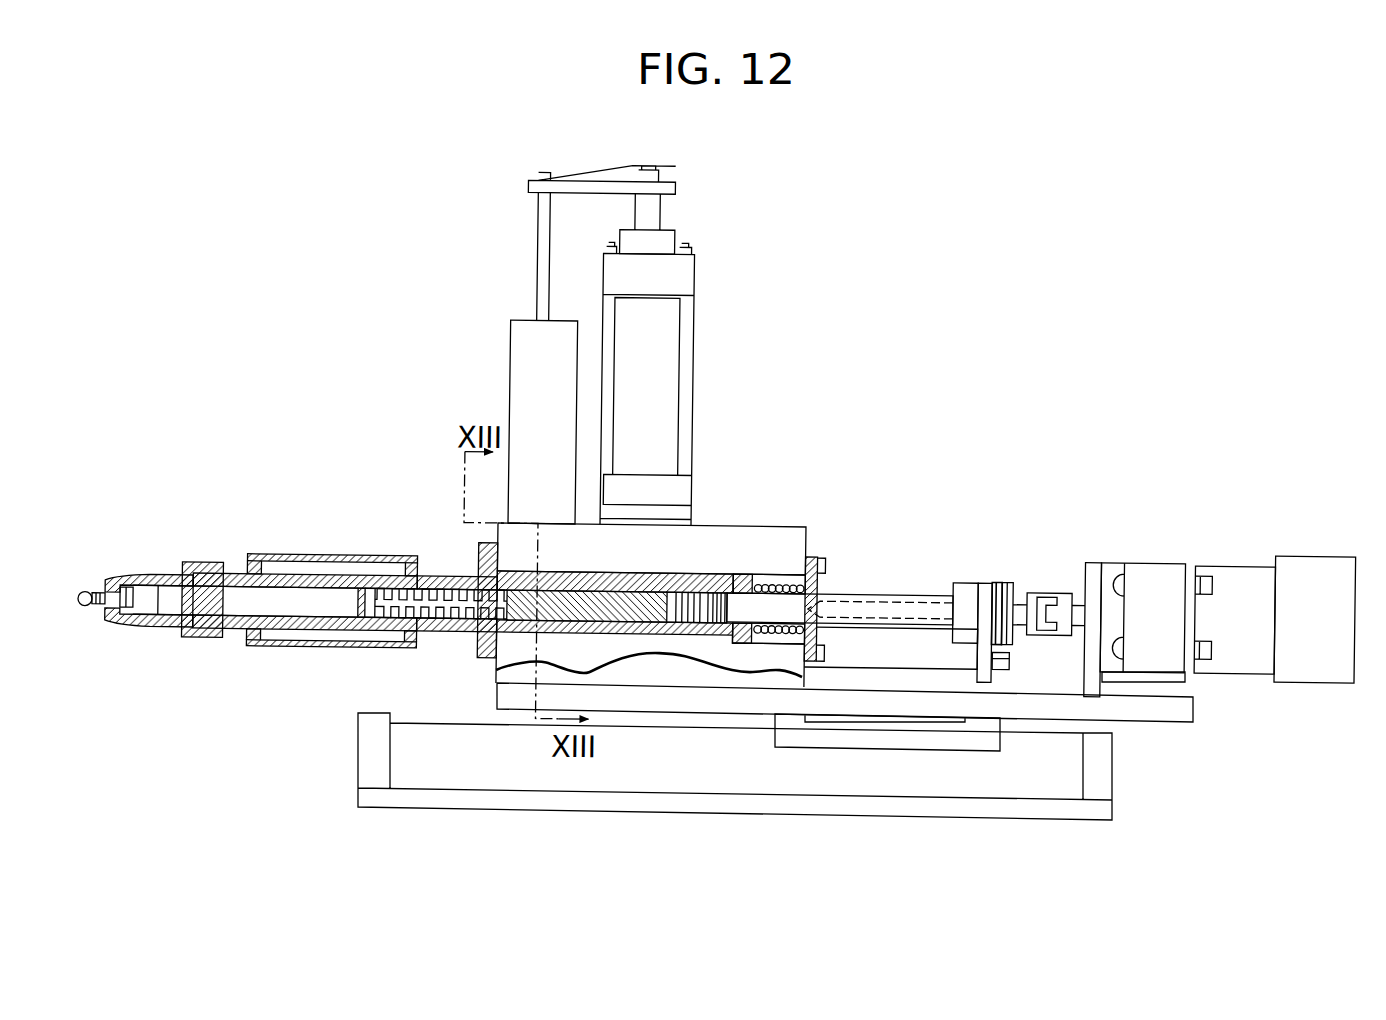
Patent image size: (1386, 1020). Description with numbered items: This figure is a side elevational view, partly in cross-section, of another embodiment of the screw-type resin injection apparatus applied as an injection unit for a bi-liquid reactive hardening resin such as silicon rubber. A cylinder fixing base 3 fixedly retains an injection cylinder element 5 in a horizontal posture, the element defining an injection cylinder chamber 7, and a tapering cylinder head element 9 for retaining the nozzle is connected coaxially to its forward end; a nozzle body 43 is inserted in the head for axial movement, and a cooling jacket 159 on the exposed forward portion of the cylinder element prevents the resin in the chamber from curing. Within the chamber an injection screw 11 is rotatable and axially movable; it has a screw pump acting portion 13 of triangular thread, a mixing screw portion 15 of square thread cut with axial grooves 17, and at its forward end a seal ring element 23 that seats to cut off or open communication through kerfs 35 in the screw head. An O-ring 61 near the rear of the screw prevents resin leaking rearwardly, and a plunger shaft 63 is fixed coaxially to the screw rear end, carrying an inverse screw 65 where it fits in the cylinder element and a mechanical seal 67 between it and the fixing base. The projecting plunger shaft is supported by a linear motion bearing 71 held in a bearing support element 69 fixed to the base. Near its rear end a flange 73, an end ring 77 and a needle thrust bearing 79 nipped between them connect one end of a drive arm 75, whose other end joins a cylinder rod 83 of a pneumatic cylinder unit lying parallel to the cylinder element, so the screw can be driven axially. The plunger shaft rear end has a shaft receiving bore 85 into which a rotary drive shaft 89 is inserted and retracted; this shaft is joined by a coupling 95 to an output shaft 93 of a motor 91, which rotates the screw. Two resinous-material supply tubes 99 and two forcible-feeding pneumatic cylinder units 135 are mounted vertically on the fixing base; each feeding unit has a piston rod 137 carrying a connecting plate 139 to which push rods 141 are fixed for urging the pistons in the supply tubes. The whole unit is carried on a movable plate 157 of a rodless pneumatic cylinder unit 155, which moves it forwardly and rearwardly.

The cylinder fixing base 3 is at (777, 545).
The injection cylinder element 5 is at (448, 633).
The injection cylinder chamber 7 is at (298, 606).
The cylinder head element 9 is at (178, 578).
The injection screw 11 is at (556, 606).
The screw pump acting portion 13 is at (600, 650).
The mixing screw portion 15 is at (420, 633).
The axial grooves 17 is at (440, 596).
The seal ring element 23 is at (362, 596).
The kerfs 35 is at (100, 622).
The nozzle body 43 is at (92, 598).
The O-ring 61 is at (690, 590).
The plunger shaft 63 is at (797, 565).
The inverse screw 65 is at (727, 590).
The mechanical seal 67 is at (735, 641).
The bearing support element 69 is at (818, 578).
The linear motion bearing 71 is at (785, 665).
The flange 73 is at (967, 640).
The drive arm 75 is at (985, 578).
The end ring 77 is at (1006, 578).
The needle thrust bearing 79 is at (995, 578).
The cylinder rod 83 is at (933, 663).
The shaft receiving bore 85 is at (920, 600).
The rotary drive shaft 89 is at (880, 612).
The motor 91 is at (1165, 560).
The output shaft 93 is at (1080, 596).
The coupling 95 is at (1045, 614).
The resinous-material supply tubes 99 is at (520, 393).
The pneumatic cylinder unit for forcibly feeding the resinous material 135 is at (663, 368).
The piston rod 137 is at (543, 247).
The connecting plate 139 is at (588, 180).
The push rods 141 is at (657, 208).
The rodless pneumatic cylinder unit 155 is at (825, 780).
The movable plate 157 is at (898, 742).
The cooling jacket 159 is at (296, 557).